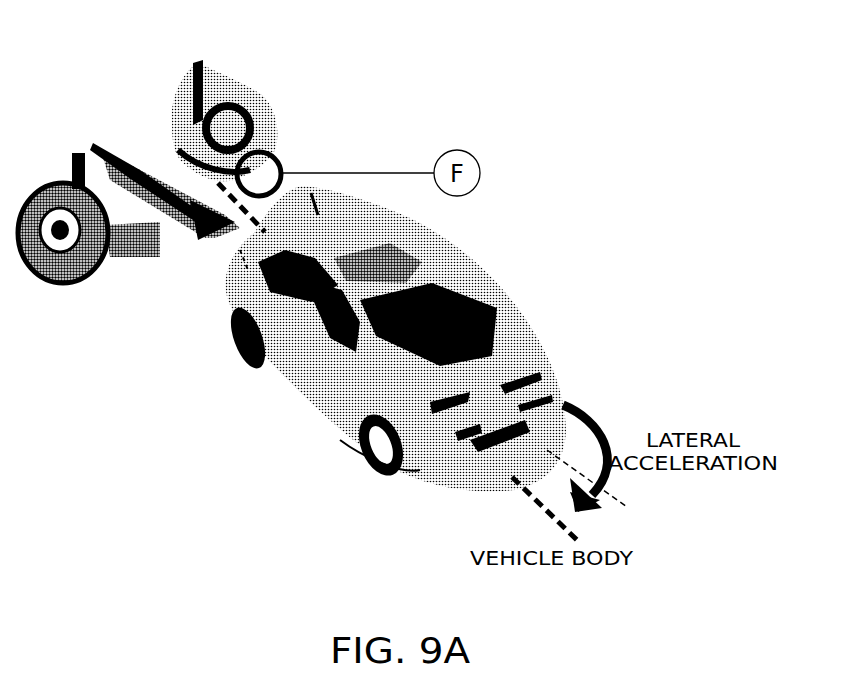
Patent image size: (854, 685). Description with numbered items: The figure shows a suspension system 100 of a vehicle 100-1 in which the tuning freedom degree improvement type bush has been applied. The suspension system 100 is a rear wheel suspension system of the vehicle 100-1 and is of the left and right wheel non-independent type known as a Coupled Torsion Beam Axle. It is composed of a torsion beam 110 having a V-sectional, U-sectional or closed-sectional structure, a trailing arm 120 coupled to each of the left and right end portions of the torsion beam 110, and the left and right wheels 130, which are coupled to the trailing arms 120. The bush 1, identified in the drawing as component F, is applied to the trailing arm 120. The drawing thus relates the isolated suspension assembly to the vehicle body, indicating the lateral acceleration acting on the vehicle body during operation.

The suspension system 100 is at (114, 100).
The vehicle 100-1 is at (318, 395).
The torsion beam 110 is at (158, 232).
The trailing arm 120 is at (222, 118).
The wheel 130 is at (48, 278).
The bush 1 is at (265, 160).